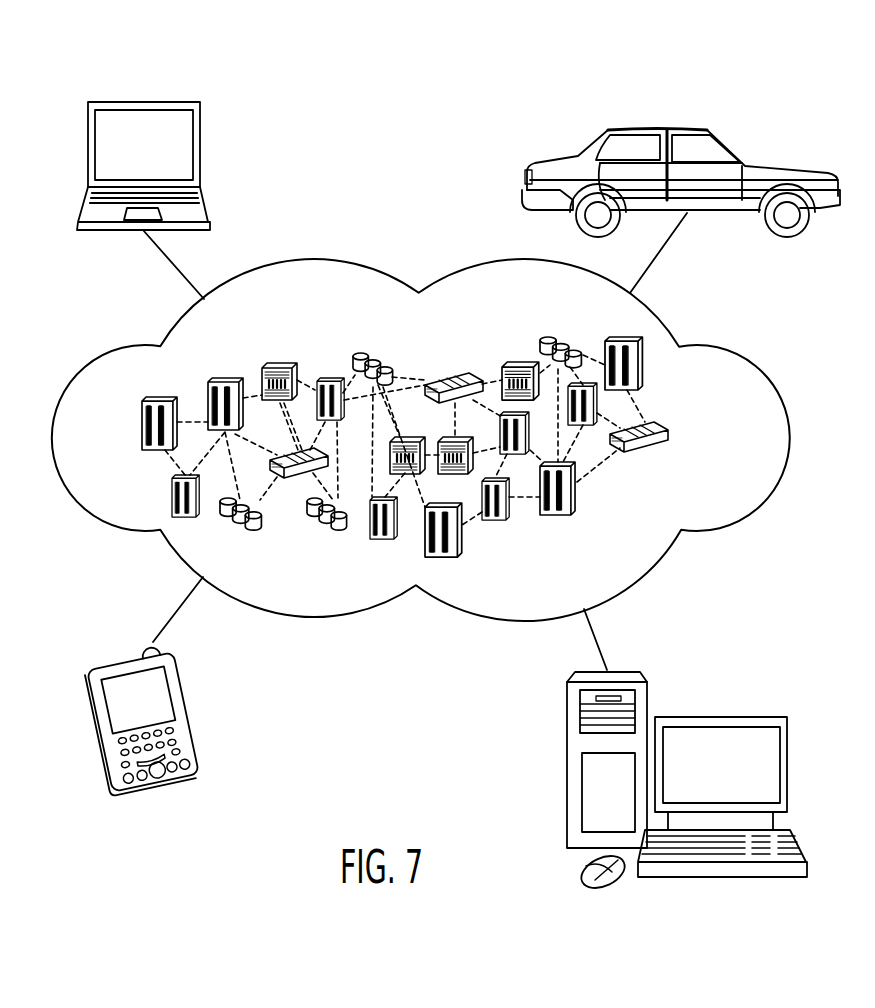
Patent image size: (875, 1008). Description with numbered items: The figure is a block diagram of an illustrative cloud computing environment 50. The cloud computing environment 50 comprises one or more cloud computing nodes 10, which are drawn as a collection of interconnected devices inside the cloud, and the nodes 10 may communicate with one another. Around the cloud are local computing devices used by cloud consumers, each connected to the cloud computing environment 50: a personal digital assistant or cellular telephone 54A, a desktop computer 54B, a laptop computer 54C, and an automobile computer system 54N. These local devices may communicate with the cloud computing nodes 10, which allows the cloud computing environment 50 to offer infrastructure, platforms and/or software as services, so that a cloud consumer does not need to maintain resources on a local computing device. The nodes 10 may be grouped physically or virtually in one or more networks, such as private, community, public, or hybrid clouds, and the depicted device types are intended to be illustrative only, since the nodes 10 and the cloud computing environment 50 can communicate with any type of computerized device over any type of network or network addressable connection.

The cloud computing node 10 is at (675, 437).
The cloud computing environment 50 is at (733, 351).
The personal digital assistant or cellular telephone 54A is at (121, 658).
The desktop computer 54B is at (721, 716).
The laptop computer 54C is at (143, 102).
The automobile computer system 54N is at (663, 128).